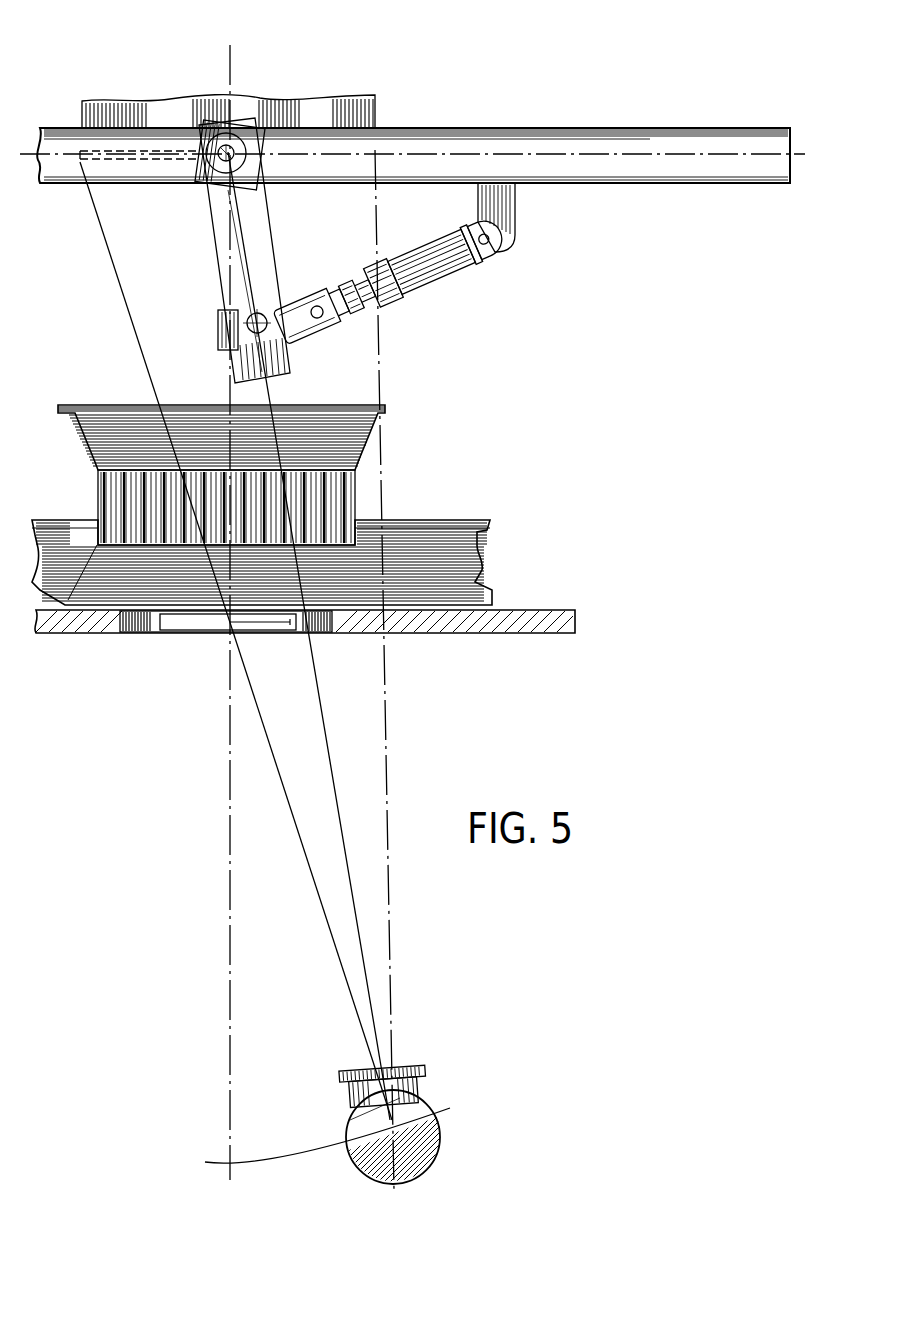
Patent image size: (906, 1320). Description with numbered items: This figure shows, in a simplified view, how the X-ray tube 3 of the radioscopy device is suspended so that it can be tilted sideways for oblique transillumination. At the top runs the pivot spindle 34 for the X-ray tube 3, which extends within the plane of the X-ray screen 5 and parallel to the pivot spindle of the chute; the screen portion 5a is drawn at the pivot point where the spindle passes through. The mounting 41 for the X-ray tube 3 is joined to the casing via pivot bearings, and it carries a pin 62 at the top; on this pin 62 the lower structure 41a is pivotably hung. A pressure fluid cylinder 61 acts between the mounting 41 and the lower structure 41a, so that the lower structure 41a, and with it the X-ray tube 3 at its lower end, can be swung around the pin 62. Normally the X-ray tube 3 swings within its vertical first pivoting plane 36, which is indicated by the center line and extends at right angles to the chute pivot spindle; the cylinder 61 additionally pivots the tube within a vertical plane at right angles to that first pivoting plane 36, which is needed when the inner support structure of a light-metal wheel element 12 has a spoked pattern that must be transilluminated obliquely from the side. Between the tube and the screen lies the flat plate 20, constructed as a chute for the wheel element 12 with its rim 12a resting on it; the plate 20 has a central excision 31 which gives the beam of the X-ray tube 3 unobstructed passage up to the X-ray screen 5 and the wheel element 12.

The X-ray tube 3 is at (422, 1120).
The X-ray screen 5 is at (308, 156).
The pivot pin 5a is at (218, 132).
The wheel element 12 is at (483, 541).
The rim flange 12a is at (378, 430).
The plate 20 is at (538, 622).
The central excision 31 is at (167, 633).
The pivot spindle 34 is at (456, 156).
The pivoting plane 36 is at (222, 845).
The mounting 41 is at (557, 186).
The lower structure 41a is at (218, 218).
The pressure fluid cylinder 61 is at (425, 278).
The pin 62 is at (207, 195).